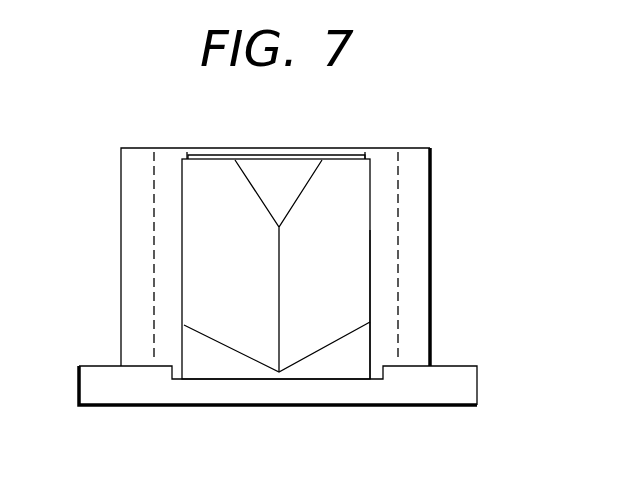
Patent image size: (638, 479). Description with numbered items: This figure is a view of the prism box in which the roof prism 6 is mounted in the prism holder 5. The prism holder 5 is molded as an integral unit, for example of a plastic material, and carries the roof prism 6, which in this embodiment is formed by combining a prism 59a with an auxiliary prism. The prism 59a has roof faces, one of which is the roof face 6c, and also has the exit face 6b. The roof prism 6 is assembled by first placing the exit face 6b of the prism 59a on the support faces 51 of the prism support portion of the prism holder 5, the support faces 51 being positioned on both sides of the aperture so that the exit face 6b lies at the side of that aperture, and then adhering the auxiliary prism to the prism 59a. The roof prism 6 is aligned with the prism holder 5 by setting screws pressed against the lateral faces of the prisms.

The prism holder 5 is at (437, 233).
The roof prism 6 is at (345, 205).
The exit face 6b is at (284, 156).
The roof face 6c is at (350, 292).
The support face 51 is at (187, 152).
The prism 59a is at (350, 335).